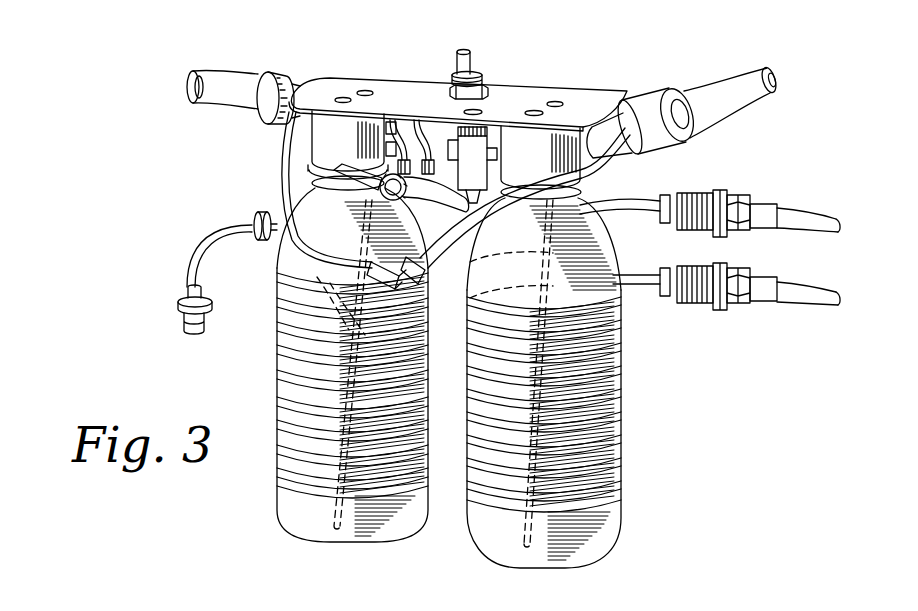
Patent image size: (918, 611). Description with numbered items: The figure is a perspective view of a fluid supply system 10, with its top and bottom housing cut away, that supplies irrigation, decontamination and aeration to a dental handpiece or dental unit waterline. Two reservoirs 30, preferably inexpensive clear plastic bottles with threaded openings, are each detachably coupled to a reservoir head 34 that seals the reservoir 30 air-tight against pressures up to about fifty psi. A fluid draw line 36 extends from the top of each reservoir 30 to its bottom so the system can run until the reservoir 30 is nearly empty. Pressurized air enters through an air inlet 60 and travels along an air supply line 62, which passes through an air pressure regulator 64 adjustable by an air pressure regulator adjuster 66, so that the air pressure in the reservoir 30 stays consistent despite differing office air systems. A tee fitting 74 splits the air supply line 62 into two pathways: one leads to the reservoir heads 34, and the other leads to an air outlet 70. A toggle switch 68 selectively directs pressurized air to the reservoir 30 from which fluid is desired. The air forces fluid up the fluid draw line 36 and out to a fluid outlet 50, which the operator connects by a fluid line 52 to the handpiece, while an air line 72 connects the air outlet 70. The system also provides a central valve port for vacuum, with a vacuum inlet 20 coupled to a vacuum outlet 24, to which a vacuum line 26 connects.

The fluid supply system 10 is at (200, 192).
The vacuum inlet 20 is at (213, 78).
The vacuum outlet 24 is at (647, 107).
The vacuum line 26 is at (720, 92).
The reservoir 30 is at (381, 543).
The reservoir head 34 is at (533, 147).
The fluid draw line 36 is at (337, 494).
The fluid outlet 50 is at (733, 192).
The fluid line 52 is at (800, 213).
The air inlet 60 is at (173, 322).
The air supply line 62 is at (193, 262).
The air pressure regulator 64 is at (450, 82).
The air pressure regulator adjuster 66 is at (457, 64).
The toggle switch 68 is at (357, 166).
The air outlet 70 is at (743, 305).
The air line 72 is at (807, 295).
The tee fitting 74 is at (423, 298).